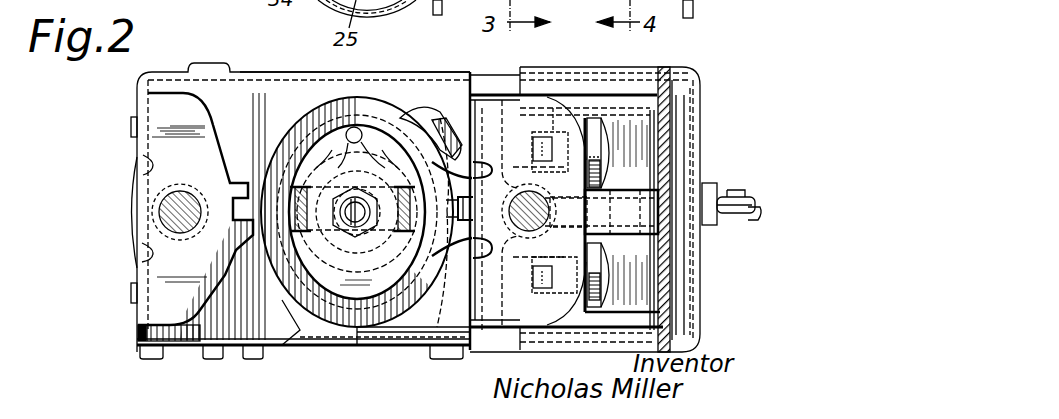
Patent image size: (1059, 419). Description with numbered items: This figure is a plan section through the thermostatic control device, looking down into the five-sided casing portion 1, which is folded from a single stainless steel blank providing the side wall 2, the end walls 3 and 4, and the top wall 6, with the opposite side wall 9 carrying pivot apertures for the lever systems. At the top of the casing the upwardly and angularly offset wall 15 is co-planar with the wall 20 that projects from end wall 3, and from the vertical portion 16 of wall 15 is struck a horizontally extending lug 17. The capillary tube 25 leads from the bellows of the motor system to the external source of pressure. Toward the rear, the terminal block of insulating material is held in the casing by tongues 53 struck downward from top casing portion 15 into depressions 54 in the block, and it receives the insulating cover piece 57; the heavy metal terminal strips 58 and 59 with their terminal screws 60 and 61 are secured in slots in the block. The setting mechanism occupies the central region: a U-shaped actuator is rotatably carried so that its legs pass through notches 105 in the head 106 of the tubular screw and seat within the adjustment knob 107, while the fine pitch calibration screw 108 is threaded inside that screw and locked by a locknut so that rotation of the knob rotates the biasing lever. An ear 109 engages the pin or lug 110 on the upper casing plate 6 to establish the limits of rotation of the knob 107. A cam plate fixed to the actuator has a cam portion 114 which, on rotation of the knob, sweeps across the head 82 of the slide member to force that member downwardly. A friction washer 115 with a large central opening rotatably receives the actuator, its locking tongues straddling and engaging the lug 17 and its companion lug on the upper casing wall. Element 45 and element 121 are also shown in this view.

The five-sided casing portion 1 is at (167, 66).
The side wall 2 is at (296, 72).
The end wall 3 is at (137, 253).
The end wall 4 is at (690, 147).
The top wall 6 is at (228, 95).
The opposite side wall 9 is at (312, 353).
The upwardly and angularly offset wall 15 is at (493, 110).
The vertical portion 16 is at (472, 74).
The horizontally extending lug 17 is at (474, 124).
The wall 20 is at (173, 137).
The tube 25 is at (737, 222).
The shaft coupling 45 is at (725, 200).
The tongues 53 is at (543, 137).
The depressions 54 is at (544, 280).
The insulating cover piece 57 is at (667, 267).
The terminal strip 58 is at (583, 318).
The terminal strip 59 is at (578, 108).
The terminal screw 60 is at (610, 282).
The terminal screw 61 is at (600, 150).
The head of slide member 82 is at (441, 330).
The notches 105 is at (357, 201).
The head of screw 106 is at (360, 268).
The adjustment knob 107 is at (293, 188).
The fine pitch calibration screw 108 is at (354, 208).
The ear 109 is at (318, 122).
The pin or lug 110 is at (356, 127).
The cam portion 114 is at (426, 108).
The friction washer 115 is at (317, 310).
The sliding vane 121 is at (326, 245).